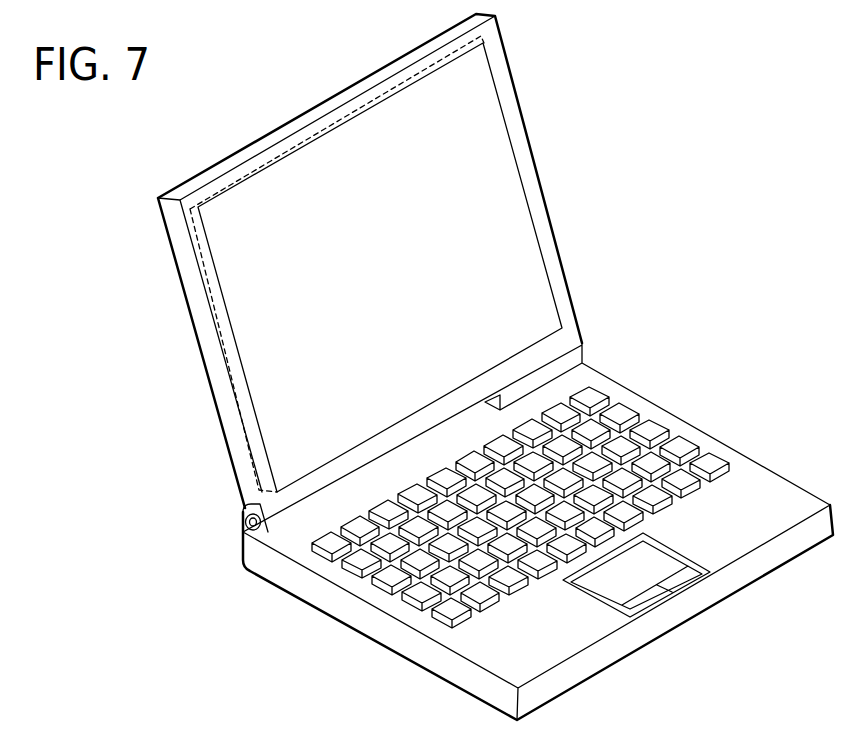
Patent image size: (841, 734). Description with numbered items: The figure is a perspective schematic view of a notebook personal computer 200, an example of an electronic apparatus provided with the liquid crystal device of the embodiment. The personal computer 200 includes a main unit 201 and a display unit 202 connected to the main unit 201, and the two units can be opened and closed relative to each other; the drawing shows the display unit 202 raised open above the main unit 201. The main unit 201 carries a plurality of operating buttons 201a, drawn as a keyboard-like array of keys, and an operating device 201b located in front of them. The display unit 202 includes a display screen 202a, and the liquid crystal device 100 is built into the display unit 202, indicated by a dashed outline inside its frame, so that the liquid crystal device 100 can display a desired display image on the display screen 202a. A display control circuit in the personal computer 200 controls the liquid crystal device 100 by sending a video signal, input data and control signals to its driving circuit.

The liquid crystal device 100 is at (285, 142).
The notebook personal computer 200 is at (484, 367).
The main unit 201 is at (748, 455).
The operating buttons 201a is at (615, 398).
The operating device 201b is at (663, 565).
The display unit 202 is at (385, 273).
The display screen 202a is at (515, 258).